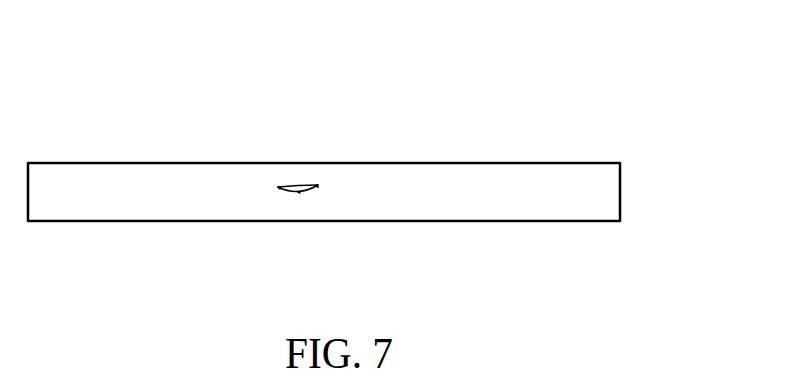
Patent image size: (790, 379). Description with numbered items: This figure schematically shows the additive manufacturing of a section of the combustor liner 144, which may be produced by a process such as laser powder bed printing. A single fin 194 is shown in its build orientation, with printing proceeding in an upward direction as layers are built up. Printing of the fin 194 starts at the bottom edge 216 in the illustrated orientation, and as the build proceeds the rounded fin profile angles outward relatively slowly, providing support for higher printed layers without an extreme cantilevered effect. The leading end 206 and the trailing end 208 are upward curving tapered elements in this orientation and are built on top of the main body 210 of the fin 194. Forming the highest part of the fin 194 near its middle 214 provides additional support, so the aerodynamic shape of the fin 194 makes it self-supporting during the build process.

The combustor liner 144 is at (620, 192).
The fin 194 is at (291, 185).
The middle 214 is at (297, 184).
The main body 210 is at (318, 185).
The trailing end 208 is at (278, 187).
The bottom edge 216 is at (300, 193).
The leading end 206 is at (318, 187).